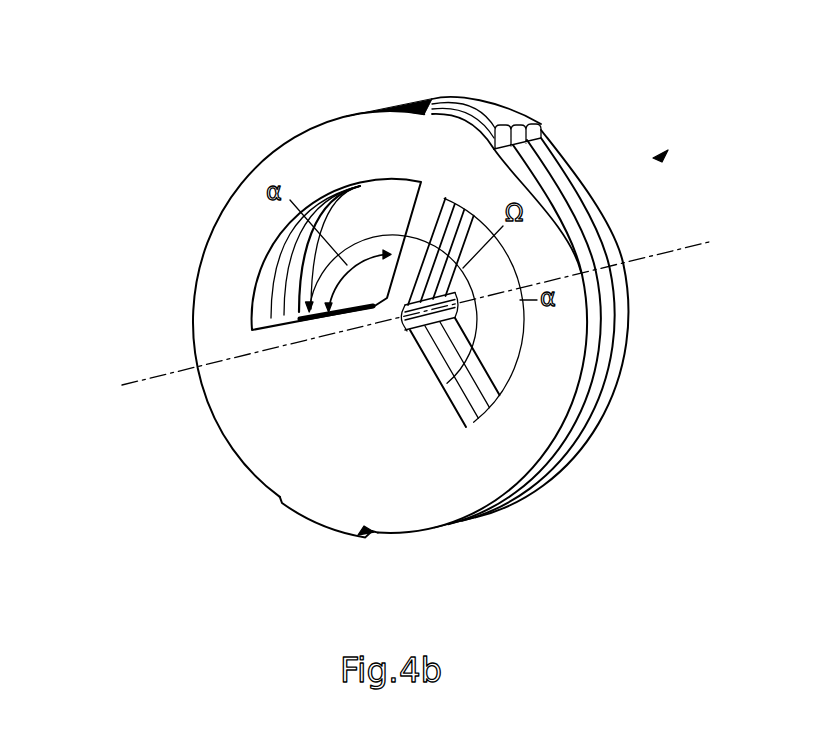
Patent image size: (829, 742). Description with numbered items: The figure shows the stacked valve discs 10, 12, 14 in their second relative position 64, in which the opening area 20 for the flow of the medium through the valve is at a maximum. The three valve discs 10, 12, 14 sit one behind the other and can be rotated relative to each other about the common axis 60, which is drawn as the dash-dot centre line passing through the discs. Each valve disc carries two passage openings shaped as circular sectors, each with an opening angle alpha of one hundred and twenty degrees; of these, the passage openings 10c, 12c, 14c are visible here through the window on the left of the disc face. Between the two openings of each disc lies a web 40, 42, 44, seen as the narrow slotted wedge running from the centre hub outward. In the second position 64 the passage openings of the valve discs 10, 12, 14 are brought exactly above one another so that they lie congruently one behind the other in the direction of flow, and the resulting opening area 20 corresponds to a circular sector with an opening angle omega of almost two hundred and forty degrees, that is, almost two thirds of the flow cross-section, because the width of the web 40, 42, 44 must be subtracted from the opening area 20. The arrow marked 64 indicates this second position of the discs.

The valve disc 10 is at (557, 159).
The valve disc 12 is at (597, 242).
The valve disc 14 is at (592, 315).
The passage opening 10c is at (327, 212).
The passage opening 12c is at (290, 257).
The passage opening 14c is at (262, 295).
The opening area 20 is at (384, 194).
The web 40 is at (497, 381).
The web 42 is at (492, 398).
The web 44 is at (483, 412).
The common axis 60 is at (126, 384).
The second position 64 is at (660, 154).